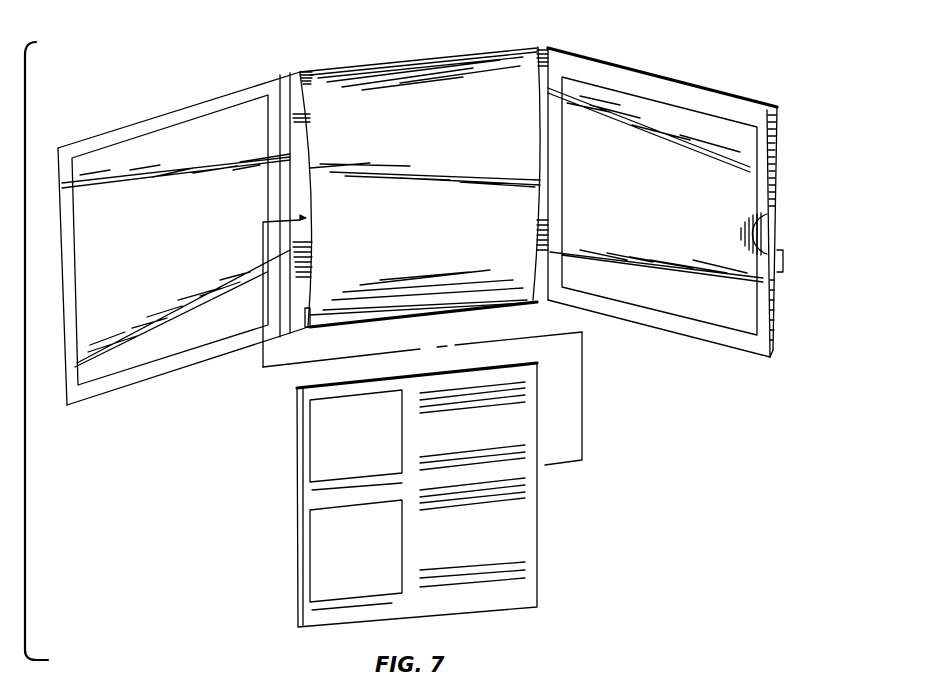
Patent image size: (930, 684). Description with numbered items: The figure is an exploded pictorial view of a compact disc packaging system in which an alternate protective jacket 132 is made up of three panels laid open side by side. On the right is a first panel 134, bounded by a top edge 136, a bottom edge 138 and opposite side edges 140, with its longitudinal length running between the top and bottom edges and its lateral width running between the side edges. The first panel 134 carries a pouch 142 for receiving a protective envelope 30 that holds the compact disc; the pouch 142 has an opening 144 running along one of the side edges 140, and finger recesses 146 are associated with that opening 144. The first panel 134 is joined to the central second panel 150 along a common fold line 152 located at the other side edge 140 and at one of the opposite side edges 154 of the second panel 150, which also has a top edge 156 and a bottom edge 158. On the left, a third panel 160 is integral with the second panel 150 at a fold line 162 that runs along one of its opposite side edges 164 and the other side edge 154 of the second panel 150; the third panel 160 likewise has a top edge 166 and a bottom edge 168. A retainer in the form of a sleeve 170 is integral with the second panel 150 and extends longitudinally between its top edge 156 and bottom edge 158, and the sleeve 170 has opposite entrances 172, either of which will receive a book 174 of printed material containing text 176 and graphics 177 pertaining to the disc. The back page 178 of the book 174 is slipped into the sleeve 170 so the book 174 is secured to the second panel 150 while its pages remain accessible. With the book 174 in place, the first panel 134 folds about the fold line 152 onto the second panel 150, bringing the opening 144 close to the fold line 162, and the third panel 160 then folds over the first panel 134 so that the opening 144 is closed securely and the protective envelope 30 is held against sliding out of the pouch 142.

The protective envelope 30 is at (784, 229).
The protective jacket 132 is at (298, 66).
The first panel 134 is at (622, 80).
The top edge 136 is at (732, 92).
The bottom edge 138 is at (673, 337).
The opposite side edges 140 is at (547, 213).
The pouch 142 is at (775, 196).
The opening 144 is at (778, 255).
The finger recesses 146 is at (737, 230).
The second panel 150 is at (539, 46).
The fold line 152 is at (548, 186).
The opposite side edges 154 is at (285, 168).
The top edge 156 is at (375, 62).
The bottom edge 158 is at (437, 318).
The third panel 160 is at (187, 108).
The fold line 162 is at (291, 149).
The opposite side edges 164 is at (291, 203).
The top edge 166 is at (132, 100).
The bottom edge 168 is at (156, 373).
The sleeve 170 is at (465, 83).
The entrances 172 is at (330, 170).
The book 174 is at (548, 545).
The text 176 is at (488, 451).
The graphics 177 is at (322, 463).
The back page 178 is at (538, 348).